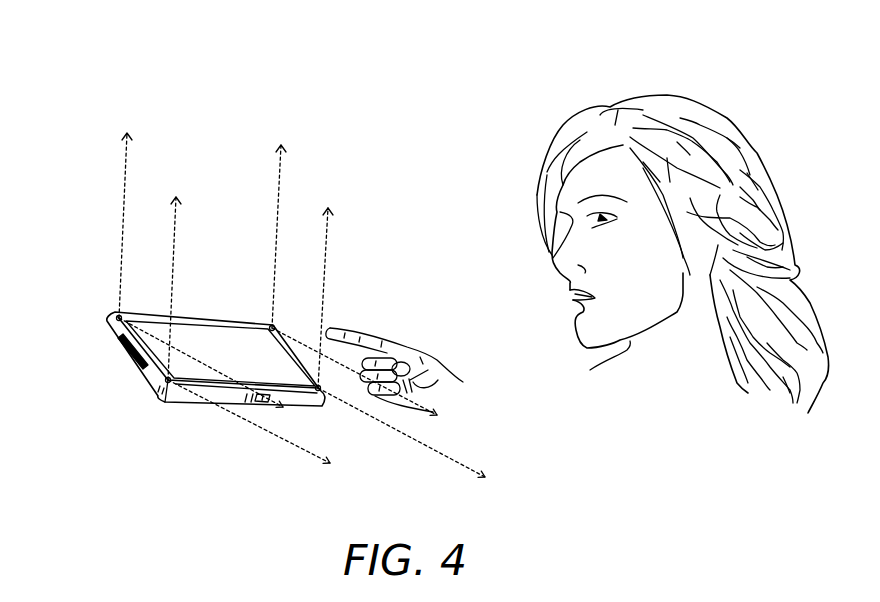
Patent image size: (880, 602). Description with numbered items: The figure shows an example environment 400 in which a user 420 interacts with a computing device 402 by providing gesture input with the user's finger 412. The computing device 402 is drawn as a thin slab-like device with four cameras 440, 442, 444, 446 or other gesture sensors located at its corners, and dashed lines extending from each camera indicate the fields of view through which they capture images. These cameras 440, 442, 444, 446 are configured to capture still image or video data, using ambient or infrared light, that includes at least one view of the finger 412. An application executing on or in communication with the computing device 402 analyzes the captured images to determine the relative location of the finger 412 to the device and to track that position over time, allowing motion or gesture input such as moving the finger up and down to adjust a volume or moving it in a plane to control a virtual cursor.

The environment 400 is at (67, 101).
The computing device 402 is at (158, 312).
The user's finger 412 is at (377, 330).
The user 420 is at (523, 162).
The camera 440 is at (273, 320).
The camera 442 is at (112, 332).
The camera 444 is at (157, 397).
The camera 446 is at (333, 407).